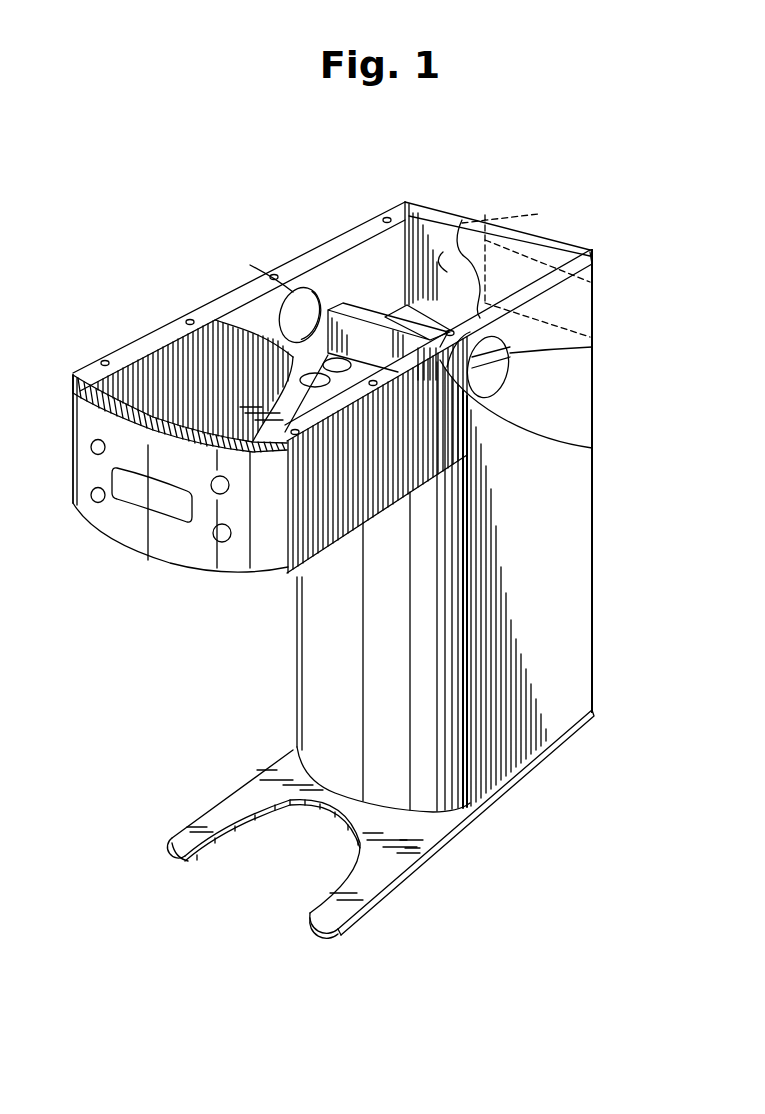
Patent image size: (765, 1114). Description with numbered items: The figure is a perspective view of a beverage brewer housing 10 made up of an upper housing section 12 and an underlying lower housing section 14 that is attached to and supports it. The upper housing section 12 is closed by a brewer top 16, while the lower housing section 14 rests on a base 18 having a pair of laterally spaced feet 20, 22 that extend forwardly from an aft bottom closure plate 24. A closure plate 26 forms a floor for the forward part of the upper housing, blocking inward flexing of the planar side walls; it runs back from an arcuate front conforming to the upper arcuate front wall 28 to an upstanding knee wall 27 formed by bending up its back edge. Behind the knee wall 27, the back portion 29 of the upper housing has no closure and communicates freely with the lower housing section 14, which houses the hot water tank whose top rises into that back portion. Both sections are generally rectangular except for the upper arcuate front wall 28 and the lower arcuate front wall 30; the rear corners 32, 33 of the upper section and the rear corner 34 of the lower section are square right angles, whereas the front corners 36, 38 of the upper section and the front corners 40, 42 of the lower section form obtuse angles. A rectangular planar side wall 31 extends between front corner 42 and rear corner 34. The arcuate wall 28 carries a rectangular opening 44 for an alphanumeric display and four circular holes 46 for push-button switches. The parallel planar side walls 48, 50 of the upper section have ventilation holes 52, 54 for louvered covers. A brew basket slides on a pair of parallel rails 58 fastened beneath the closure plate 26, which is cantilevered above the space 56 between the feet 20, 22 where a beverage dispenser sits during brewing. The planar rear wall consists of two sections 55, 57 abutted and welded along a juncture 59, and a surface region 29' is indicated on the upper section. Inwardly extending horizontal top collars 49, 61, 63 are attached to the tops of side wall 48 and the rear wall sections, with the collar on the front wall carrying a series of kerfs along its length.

The beverage brewer housing 10 is at (150, 668).
The upper housing section 12 is at (68, 480).
The lower housing section 14 is at (572, 550).
The brewer top 16 is at (523, 258).
The base 18 is at (405, 870).
The foot 20 is at (222, 805).
The foot 22 is at (332, 913).
The bottom closure plate 24 is at (510, 790).
The closure plate 26 is at (145, 355).
The knee wall 27 is at (293, 292).
The upper arcuate front wall 28 is at (168, 555).
The back portion / top collar 29 is at (320, 278).
The concave surface 29' is at (195, 363).
The lower arcuate front wall 30 is at (323, 707).
The side wall 31 is at (560, 497).
The rear corner 32 is at (393, 255).
The rear corner 33 is at (595, 265).
The rear corner 34 is at (604, 428).
The front corner 36 is at (97, 375).
The front corner 38 is at (258, 525).
The front corner 40 is at (297, 640).
The front corner 42 is at (515, 650).
The rectangular opening 44 is at (140, 510).
The circular holes 46 is at (92, 447).
The side wall 48 is at (290, 297).
The top collar 49 is at (250, 295).
The side wall 50 is at (583, 314).
The ventilation hole 52 is at (233, 315).
The ventilation hole 54 is at (505, 362).
The rear wall section 55 is at (458, 232).
The space 56 is at (274, 876).
The rear wall section 57 is at (592, 282).
The rails 58 is at (286, 520).
The juncture 59 is at (590, 337).
The top collar 61 is at (427, 210).
The top collar 63 is at (537, 214).